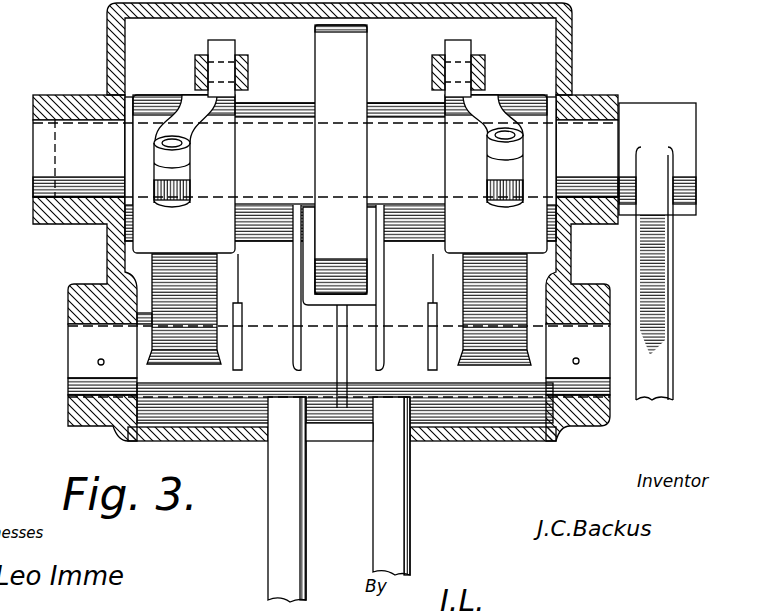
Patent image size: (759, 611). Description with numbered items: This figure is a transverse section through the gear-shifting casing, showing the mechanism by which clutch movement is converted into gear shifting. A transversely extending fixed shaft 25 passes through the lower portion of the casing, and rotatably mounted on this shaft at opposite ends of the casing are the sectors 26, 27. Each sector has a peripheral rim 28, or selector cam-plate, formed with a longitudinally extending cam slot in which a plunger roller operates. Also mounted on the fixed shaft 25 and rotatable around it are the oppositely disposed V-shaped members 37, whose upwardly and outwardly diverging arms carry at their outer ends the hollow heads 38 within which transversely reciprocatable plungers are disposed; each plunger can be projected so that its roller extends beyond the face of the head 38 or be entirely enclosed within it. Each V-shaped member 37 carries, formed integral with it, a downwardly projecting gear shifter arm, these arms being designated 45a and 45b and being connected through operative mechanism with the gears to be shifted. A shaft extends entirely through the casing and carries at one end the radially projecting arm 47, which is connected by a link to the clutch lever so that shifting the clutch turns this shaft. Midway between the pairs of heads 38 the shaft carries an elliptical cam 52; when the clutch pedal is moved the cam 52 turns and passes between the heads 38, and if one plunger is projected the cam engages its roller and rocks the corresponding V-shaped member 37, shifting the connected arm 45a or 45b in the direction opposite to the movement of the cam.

The fixed shaft 25 is at (76, 366).
The sector 26 is at (167, 272).
The sector 27 is at (496, 344).
The peripheral rim 28 is at (160, 107).
The V-shaped member 37 is at (335, 287).
The hollow head 38 is at (275, 118).
The gear shifter arm 45a is at (397, 483).
The gear shifter arm 45b is at (305, 500).
The radially projecting arm 47 is at (661, 366).
The cam 52 is at (357, 69).